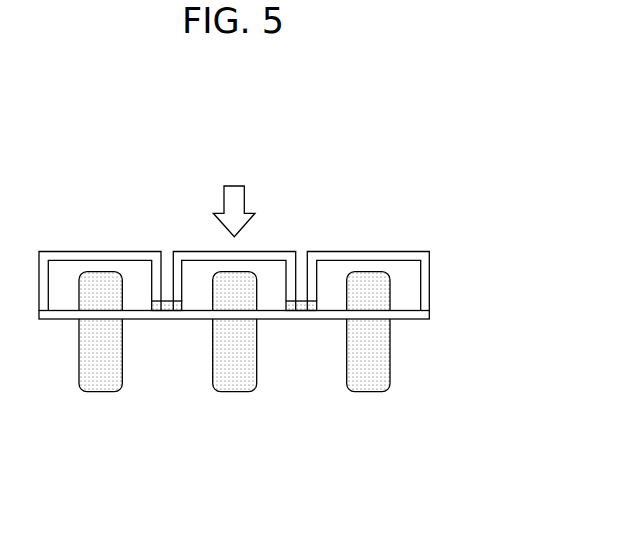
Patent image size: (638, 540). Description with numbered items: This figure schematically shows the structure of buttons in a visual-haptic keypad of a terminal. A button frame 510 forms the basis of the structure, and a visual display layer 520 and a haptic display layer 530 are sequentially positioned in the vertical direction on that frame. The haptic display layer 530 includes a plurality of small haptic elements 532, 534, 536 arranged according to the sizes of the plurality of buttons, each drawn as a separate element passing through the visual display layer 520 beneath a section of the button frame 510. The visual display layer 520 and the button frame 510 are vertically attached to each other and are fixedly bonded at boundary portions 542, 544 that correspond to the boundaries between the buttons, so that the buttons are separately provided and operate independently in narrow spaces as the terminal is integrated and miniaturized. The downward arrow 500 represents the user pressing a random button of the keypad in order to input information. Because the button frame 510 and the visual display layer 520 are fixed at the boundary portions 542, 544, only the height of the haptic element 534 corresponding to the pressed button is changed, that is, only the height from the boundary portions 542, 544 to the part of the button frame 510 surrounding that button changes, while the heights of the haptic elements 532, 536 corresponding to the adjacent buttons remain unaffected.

The button press 500 is at (244, 193).
The button frame 510 is at (429, 260).
The visual display layer 520 is at (429, 315).
The haptic display layer 530 is at (234, 386).
The haptic element 532 is at (102, 389).
The haptic element 534 is at (235, 389).
The haptic element 536 is at (368, 358).
The boundary portion 542 is at (165, 306).
The boundary portion 544 is at (302, 305).